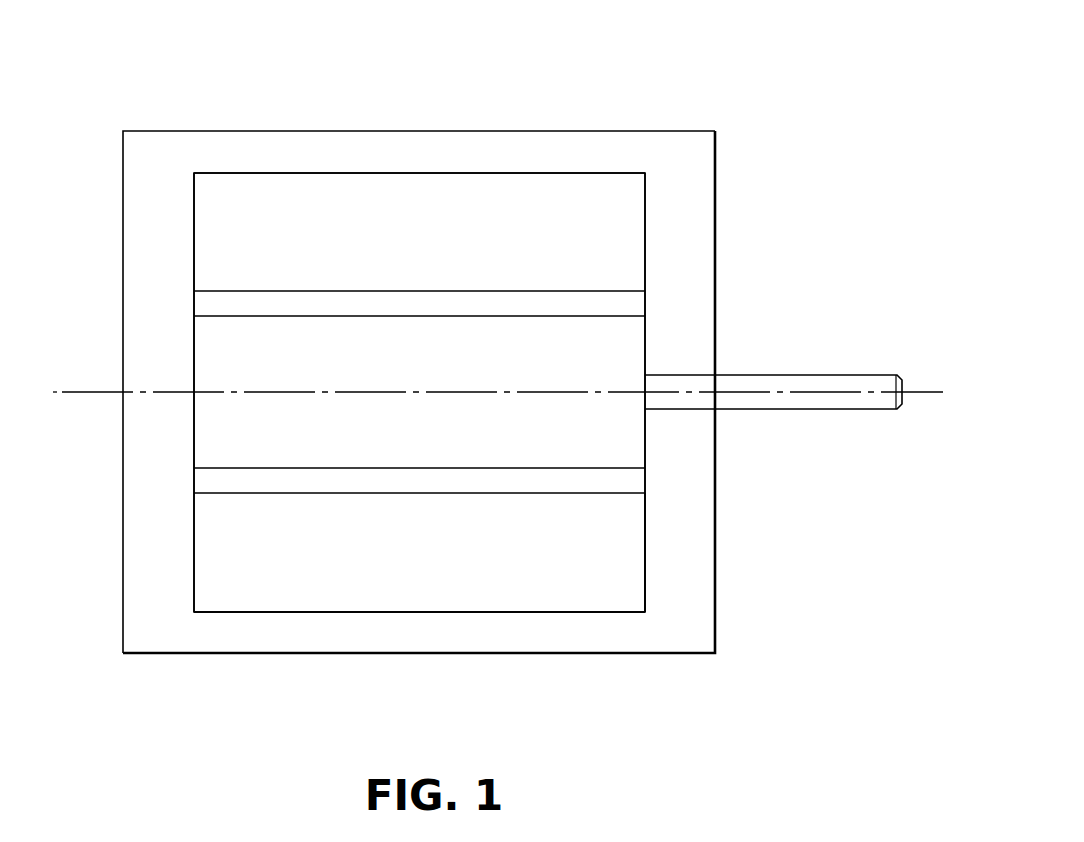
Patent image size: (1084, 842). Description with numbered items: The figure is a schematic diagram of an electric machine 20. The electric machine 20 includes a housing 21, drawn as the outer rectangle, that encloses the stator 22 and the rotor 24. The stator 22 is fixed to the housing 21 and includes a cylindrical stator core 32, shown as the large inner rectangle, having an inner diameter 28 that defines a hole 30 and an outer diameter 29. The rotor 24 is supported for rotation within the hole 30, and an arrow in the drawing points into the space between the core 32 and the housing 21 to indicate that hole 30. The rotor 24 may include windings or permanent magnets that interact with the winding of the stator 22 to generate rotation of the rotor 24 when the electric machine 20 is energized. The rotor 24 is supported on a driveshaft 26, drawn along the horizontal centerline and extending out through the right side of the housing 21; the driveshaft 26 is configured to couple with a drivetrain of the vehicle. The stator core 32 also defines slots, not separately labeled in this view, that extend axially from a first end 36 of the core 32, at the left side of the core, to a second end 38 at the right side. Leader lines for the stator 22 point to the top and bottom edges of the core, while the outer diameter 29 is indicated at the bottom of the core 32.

The electric machine 20 is at (699, 84).
The housing 21 is at (421, 131).
The stator 22 is at (294, 173).
The rotor 24 is at (194, 357).
The driveshaft 26 is at (783, 375).
The inner diameter 28 is at (612, 292).
The outer diameter 29 is at (286, 612).
The hole 30 is at (666, 476).
The stator core 32 is at (645, 233).
The first end 36 is at (194, 240).
The second end 38 is at (645, 547).